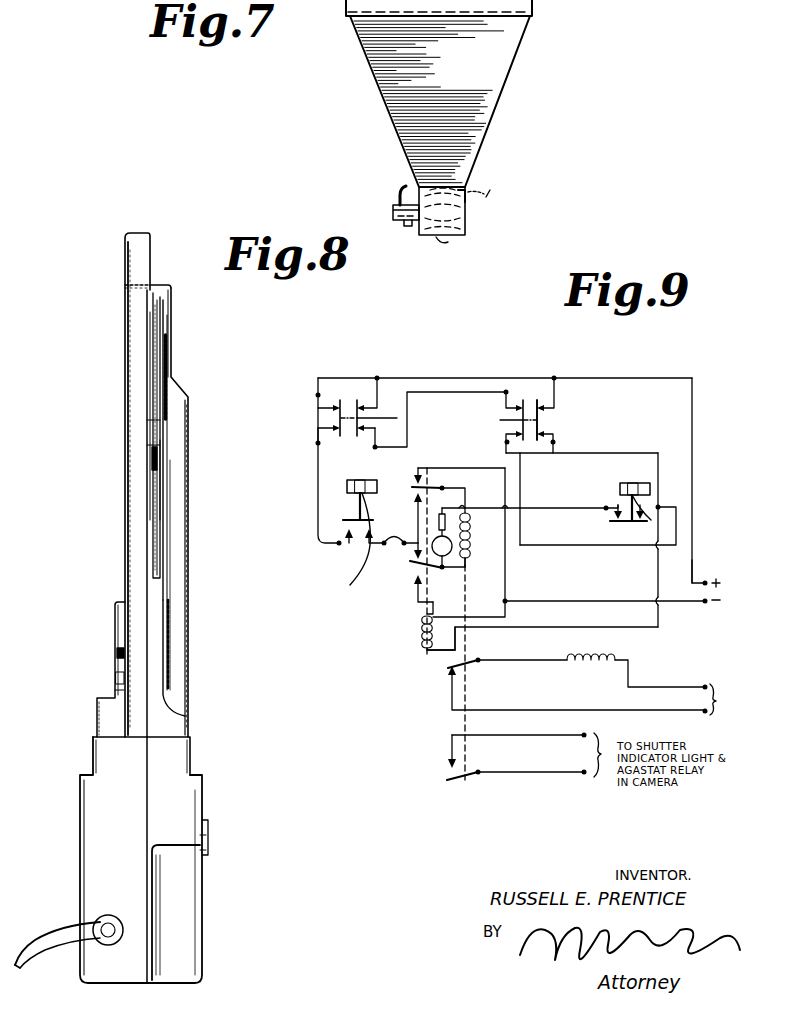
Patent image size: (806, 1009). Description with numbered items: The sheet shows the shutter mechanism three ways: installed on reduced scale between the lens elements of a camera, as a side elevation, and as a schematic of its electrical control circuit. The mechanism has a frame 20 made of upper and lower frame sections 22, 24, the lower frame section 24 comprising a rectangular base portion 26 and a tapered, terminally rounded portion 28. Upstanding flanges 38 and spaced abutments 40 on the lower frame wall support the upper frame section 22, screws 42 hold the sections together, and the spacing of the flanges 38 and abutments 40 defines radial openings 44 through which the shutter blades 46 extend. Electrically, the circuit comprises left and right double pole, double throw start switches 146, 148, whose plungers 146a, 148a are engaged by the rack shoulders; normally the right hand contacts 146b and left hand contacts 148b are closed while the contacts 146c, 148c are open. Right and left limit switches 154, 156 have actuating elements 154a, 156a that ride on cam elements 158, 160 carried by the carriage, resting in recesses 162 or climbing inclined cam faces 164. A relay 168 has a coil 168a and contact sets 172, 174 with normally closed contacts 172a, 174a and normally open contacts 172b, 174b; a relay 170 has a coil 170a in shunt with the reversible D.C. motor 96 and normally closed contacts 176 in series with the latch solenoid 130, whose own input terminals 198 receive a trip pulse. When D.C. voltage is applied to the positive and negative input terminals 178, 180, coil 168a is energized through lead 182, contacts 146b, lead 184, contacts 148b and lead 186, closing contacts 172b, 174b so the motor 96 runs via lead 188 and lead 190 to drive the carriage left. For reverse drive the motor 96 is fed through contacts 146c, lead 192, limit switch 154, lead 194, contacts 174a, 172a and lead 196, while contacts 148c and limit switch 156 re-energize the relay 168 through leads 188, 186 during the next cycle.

In FIG. 7, the frame 20 is at (404, 223).
In FIG. 8, the frame 20 is at (196, 726).
In FIG. 8, the upper frame section 22 is at (125, 470).
In FIG. 8, the lower frame section 24 is at (190, 470).
In FIG. 8, the base portion 26 is at (202, 982).
In FIG. 8, the tapered portion 28 is at (172, 318).
In FIG. 8, the flanges 38 is at (166, 628).
In FIG. 8, the abutments 40 is at (152, 287).
In FIG. 8, the screws 42 is at (118, 689).
In FIG. 8, the radial openings 44 is at (170, 290).
In FIG. 8, the shutter blades 46 is at (152, 318).
In FIG. 9, the reversible D.C. motor 96 is at (450, 570).
In FIG. 9, the solenoid 130 is at (605, 650).
In FIG. 9, the left hand start switch 146 is at (350, 380).
In FIG. 9, the plunger of left hand start switch 146a is at (384, 415).
In FIG. 9, the right hand contacts of left start switch 146b is at (377, 439).
In FIG. 9, the normally open contacts of left start switch 146c is at (323, 440).
In FIG. 9, the right hand start switch 148 is at (534, 392).
In FIG. 9, the plunger of right hand start switch 148a is at (500, 421).
In FIG. 9, the left hand contacts of right start switch 148b is at (518, 456).
In FIG. 9, the normally open contacts of right start switch 148c is at (541, 411).
In FIG. 9, the right limit switch 154 is at (338, 510).
In FIG. 9, the actuating element of right limit switch 154a is at (327, 545).
In FIG. 9, the left limit switch 156 is at (672, 491).
In FIG. 9, the actuating element of left limit switch 156a is at (608, 507).
In FIG. 9, the upper cam element 158 is at (346, 486).
In FIG. 9, the lower cam element 160 is at (650, 484).
In FIG. 9, the cam recesses 162 is at (350, 585).
In FIG. 9, the inclined cam faces 164 is at (377, 481).
In FIG. 9, the relay 168 is at (408, 657).
In FIG. 9, the relay coil 168a is at (420, 637).
In FIG. 9, the relay 170 is at (492, 533).
In FIG. 9, the relay coil 170a is at (472, 550).
In FIG. 9, the contact set 172 is at (443, 484).
In FIG. 9, the normally closed contacts 172a is at (413, 478).
In FIG. 9, the normally open contacts 172b is at (415, 502).
In FIG. 9, the contact set 174 is at (412, 565).
In FIG. 9, the normally closed contacts 174a is at (408, 560).
In FIG. 9, the normally open contacts 174b is at (413, 582).
In FIG. 9, the normally closed contacts 176 is at (447, 670).
In FIG. 9, the positive input terminal 178 is at (710, 582).
In FIG. 9, the negative input terminal 180 is at (700, 607).
In FIG. 9, the lead 182 is at (670, 378).
In FIG. 9, the lead 184 is at (455, 378).
In FIG. 9, the lead 186 is at (575, 453).
In FIG. 9, the lead 188 is at (648, 520).
In FIG. 9, the lead 190 is at (420, 612).
In FIG. 9, the lead 192 is at (318, 475).
In FIG. 9, the lead 194 is at (412, 540).
In FIG. 9, the lead 196 is at (506, 568).
In FIG. 9, the solenoid input terminals 198 is at (727, 699).